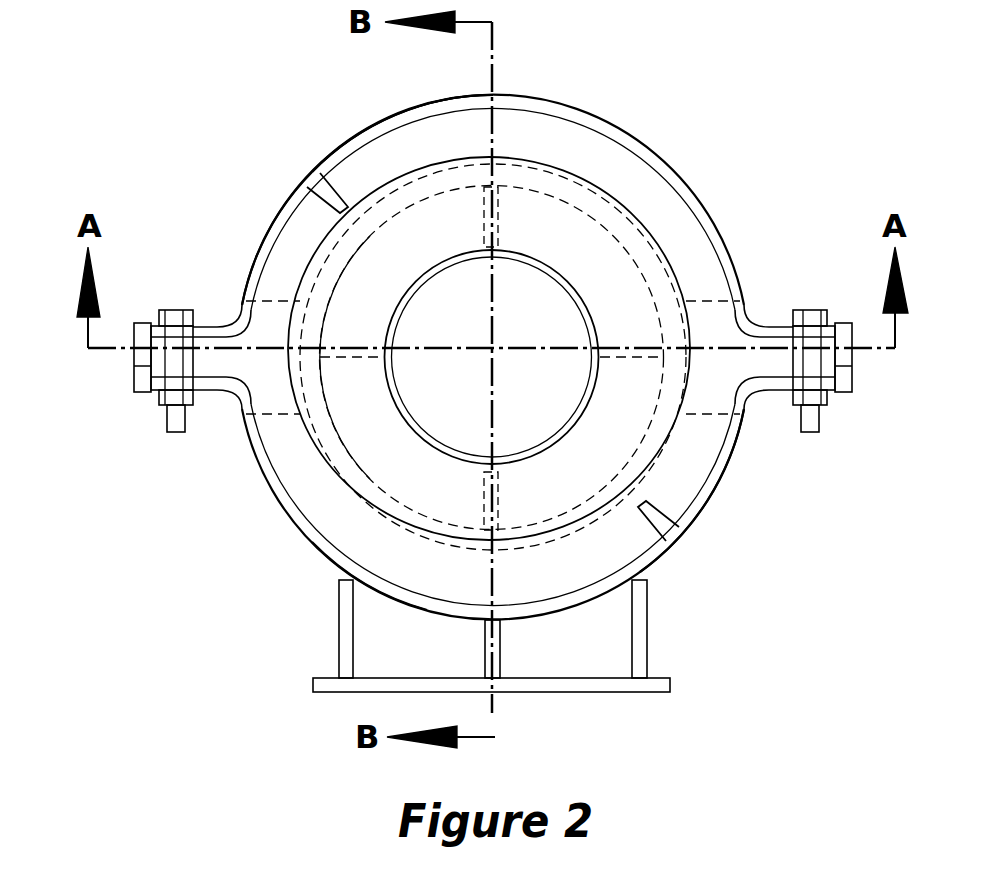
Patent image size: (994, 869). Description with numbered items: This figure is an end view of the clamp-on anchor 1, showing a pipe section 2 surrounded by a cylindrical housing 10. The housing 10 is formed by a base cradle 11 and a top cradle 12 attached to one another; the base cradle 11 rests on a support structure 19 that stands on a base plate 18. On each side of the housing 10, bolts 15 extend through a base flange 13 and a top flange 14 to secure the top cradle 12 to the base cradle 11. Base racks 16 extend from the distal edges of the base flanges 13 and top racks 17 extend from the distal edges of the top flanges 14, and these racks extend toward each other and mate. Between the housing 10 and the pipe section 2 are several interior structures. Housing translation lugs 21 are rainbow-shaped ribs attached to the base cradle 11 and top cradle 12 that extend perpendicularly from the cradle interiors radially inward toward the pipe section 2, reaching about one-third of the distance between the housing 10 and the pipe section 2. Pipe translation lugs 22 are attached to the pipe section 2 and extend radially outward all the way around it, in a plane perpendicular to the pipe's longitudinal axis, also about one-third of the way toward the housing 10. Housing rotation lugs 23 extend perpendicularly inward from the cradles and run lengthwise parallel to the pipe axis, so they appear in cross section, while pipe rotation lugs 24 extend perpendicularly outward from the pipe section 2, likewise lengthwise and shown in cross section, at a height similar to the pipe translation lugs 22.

The anchor 1 is at (760, 170).
The pipe section 2 is at (583, 297).
The cylindrical housing 10 is at (218, 170).
The base cradle 11 is at (732, 482).
The top cradle 12 is at (578, 107).
The base flange 13 is at (208, 383).
The top flange 14 is at (205, 330).
The bolts 15 is at (176, 432).
The base racks 16 is at (138, 385).
The top racks 17 is at (135, 323).
The base plate 18 is at (672, 686).
The support structure 19 is at (648, 630).
The housing translation lugs 21 is at (382, 150).
The pipe translation lugs 22 is at (570, 240).
The housing rotation lugs 23 is at (316, 175).
The pipe rotation lugs 24 is at (497, 198).